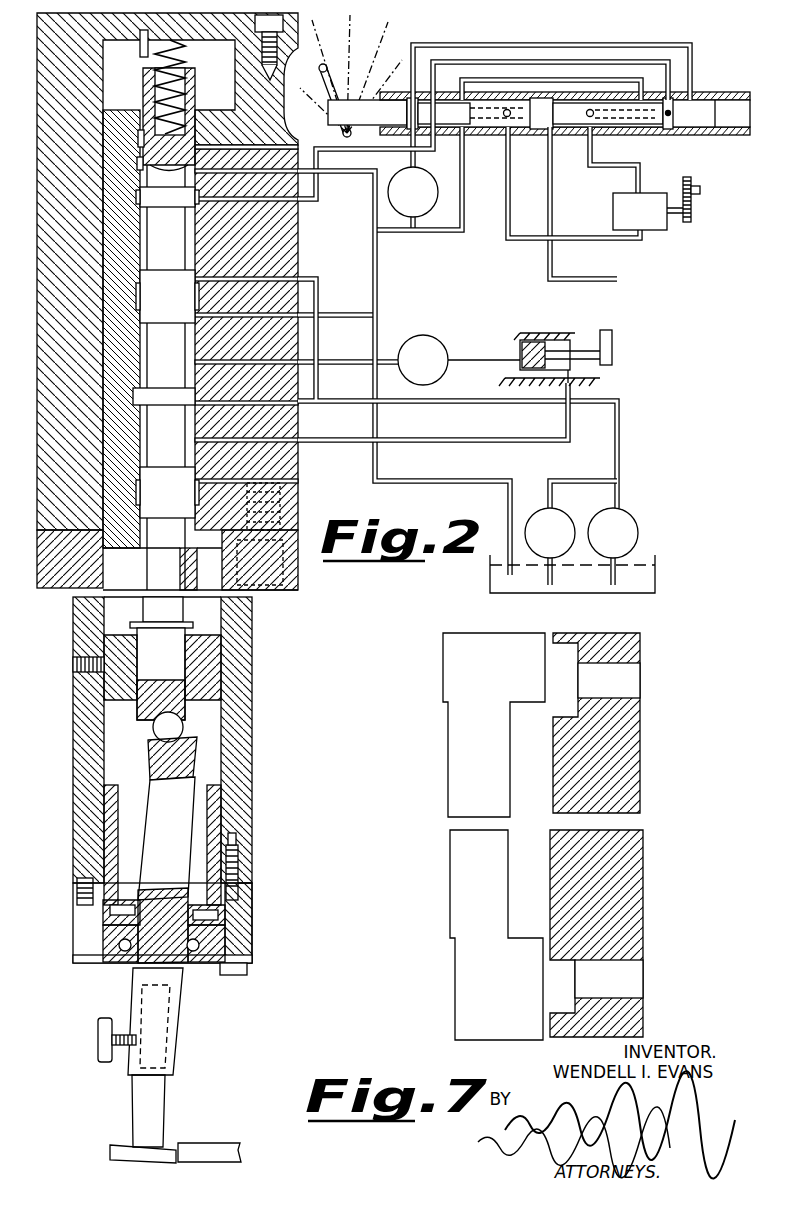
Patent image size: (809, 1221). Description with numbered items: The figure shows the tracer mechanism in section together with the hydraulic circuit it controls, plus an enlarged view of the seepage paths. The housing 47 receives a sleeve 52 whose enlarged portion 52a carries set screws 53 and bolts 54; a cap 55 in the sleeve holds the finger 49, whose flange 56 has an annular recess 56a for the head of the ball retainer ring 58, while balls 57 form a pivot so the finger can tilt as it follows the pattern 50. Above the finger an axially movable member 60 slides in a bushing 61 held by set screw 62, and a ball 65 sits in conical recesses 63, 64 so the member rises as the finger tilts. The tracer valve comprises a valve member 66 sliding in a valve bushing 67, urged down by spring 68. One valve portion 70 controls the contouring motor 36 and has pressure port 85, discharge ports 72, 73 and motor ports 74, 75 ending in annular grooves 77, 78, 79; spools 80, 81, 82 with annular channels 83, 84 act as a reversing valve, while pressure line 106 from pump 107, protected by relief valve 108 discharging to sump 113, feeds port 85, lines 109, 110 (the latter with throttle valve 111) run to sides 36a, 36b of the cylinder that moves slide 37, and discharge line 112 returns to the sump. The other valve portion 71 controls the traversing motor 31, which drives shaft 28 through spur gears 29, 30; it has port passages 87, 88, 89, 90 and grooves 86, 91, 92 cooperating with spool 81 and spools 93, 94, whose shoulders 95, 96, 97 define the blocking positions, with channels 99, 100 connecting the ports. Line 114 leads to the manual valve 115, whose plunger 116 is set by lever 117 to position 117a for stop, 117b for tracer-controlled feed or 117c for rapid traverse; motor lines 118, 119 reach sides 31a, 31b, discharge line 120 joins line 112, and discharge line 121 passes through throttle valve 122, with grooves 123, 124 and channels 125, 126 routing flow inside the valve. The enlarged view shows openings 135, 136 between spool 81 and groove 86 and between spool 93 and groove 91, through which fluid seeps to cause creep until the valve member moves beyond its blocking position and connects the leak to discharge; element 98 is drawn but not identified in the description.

In FIG. 2, the shaft 28 is at (702, 190).
In FIG. 2, the spur gear 29 is at (690, 180).
In FIG. 2, the spur gear 30 is at (692, 215).
In FIG. 2, the rotary hydraulic motor 31 is at (665, 228).
In FIG. 2, the motor side 31a is at (640, 242).
In FIG. 2, the motor side 31b is at (618, 196).
In FIG. 2, the hydraulic cylinder 36 is at (548, 340).
In FIG. 2, the cylinder side 36a is at (576, 386).
In FIG. 2, the cylinder side 36b is at (520, 355).
In FIG. 2, the slide member 37 is at (602, 330).
In FIG. 2, the housing 47 is at (253, 700).
In FIG. 2, the finger 49 is at (176, 1070).
In FIG. 2, the pattern 50 is at (212, 1143).
In FIG. 2, the sleeve 52 is at (220, 800).
In FIG. 2, the enlarged portion 52a is at (255, 937).
In FIG. 2, the set screws 53 is at (77, 886).
In FIG. 2, the bolts 54 is at (248, 970).
In FIG. 2, the cap 55 is at (207, 964).
In FIG. 2, the flange 56 is at (222, 905).
In FIG. 2, the annular recess 56a is at (212, 920).
In FIG. 2, the balls 57 is at (116, 962).
In FIG. 2, the ball retainer ring 58 is at (192, 964).
In FIG. 2, the axially movable member 60 is at (185, 637).
In FIG. 2, the bushing 61 is at (214, 650).
In FIG. 2, the set screw 62 is at (73, 663).
In FIG. 2, the conical recess 63 is at (186, 722).
In FIG. 2, the conical recess 64 is at (197, 745).
In FIG. 2, the ball 65 is at (153, 727).
In FIG. 2, the valve member 66 is at (140, 578).
In FIG. 2, the valve bushing 67 is at (108, 385).
In FIG. 2, the spring 68 is at (187, 62).
In FIG. 2, the valve portion 70 is at (110, 410).
In FIG. 2, the valve portion 71 is at (112, 231).
In FIG. 2, the discharge port 72 is at (300, 332).
In FIG. 2, the discharge port 73 is at (284, 487).
In FIG. 2, the motor port 74 is at (297, 447).
In FIG. 2, the motor port 75 is at (297, 370).
In FIG. 2, the annular groove 77 is at (200, 390).
In FIG. 2, the annular groove 78 is at (105, 295).
In FIG. 2, the annular groove 79 is at (198, 466).
In FIG. 2, the spool 80 is at (164, 377).
In FIG. 2, the spool 81 is at (155, 303).
In FIG. 7, the spool 81 is at (502, 980).
In FIG. 2, the spool 82 is at (155, 501).
In FIG. 2, the annular channel 83 is at (141, 349).
In FIG. 2, the annular channel 84 is at (143, 432).
In FIG. 2, the pressure port 85 is at (297, 406).
In FIG. 2, the annular groove 86 is at (197, 277).
In FIG. 7, the annular groove 86 is at (580, 947).
In FIG. 2, the port passage 87 is at (292, 272).
In FIG. 7, the port passage 87 is at (618, 970).
In FIG. 2, the port passage 88 is at (290, 205).
In FIG. 7, the port passage 88 is at (612, 690).
In FIG. 2, the port passage 89 is at (248, 149).
In FIG. 2, the port passage 90 is at (252, 173).
In FIG. 2, the annular groove 91 is at (198, 205).
In FIG. 7, the annular groove 91 is at (582, 725).
In FIG. 2, the annular groove 92 is at (198, 138).
In FIG. 2, the spool 93 is at (157, 207).
In FIG. 7, the spool 93 is at (527, 673).
In FIG. 2, the spool 94 is at (143, 130).
In FIG. 2, the upper shoulder 95 is at (160, 272).
In FIG. 7, the upper shoulder 95 is at (464, 936).
In FIG. 2, the lower shoulder 96 is at (141, 216).
In FIG. 7, the lower shoulder 96 is at (483, 704).
In FIG. 2, the lower shoulder 97 is at (140, 160).
In FIG. 2, the edge 98 is at (170, 188).
In FIG. 2, the channel 99 is at (140, 176).
In FIG. 2, the annular channel 100 is at (190, 248).
In FIG. 2, the pressure line 106 is at (322, 292).
In FIG. 2, the pump 107 is at (625, 512).
In FIG. 2, the relief valve 108 is at (562, 512).
In FIG. 2, the line 109 is at (505, 440).
In FIG. 2, the line 110 is at (460, 348).
In FIG. 2, the throttle valve 111 is at (403, 342).
In FIG. 2, the discharge line 112 is at (378, 260).
In FIG. 2, the sump 113 is at (655, 594).
In FIG. 2, the line 114 is at (463, 64).
In FIG. 2, the valve 115 is at (714, 90).
In FIG. 2, the movable plunger 116 is at (386, 122).
In FIG. 2, the lever 117 is at (328, 108).
In FIG. 2, the lever position 117a is at (352, 40).
In FIG. 2, the lever position 117b is at (318, 45).
In FIG. 2, the lever position 117c is at (305, 80).
In FIG. 2, the motor line 118 is at (512, 210).
In FIG. 2, the motor line 119 is at (634, 187).
In FIG. 2, the discharge line 120 is at (540, 81).
In FIG. 2, the discharge line 121 is at (545, 46).
In FIG. 2, the throttle valve 122 is at (425, 218).
In FIG. 2, the groove 123 is at (436, 96).
In FIG. 2, the groove 124 is at (688, 96).
In FIG. 2, the channel 125 is at (652, 122).
In FIG. 2, the channel 126 is at (488, 130).
In FIG. 7, the opening 135 is at (546, 937).
In FIG. 7, the opening 136 is at (550, 715).